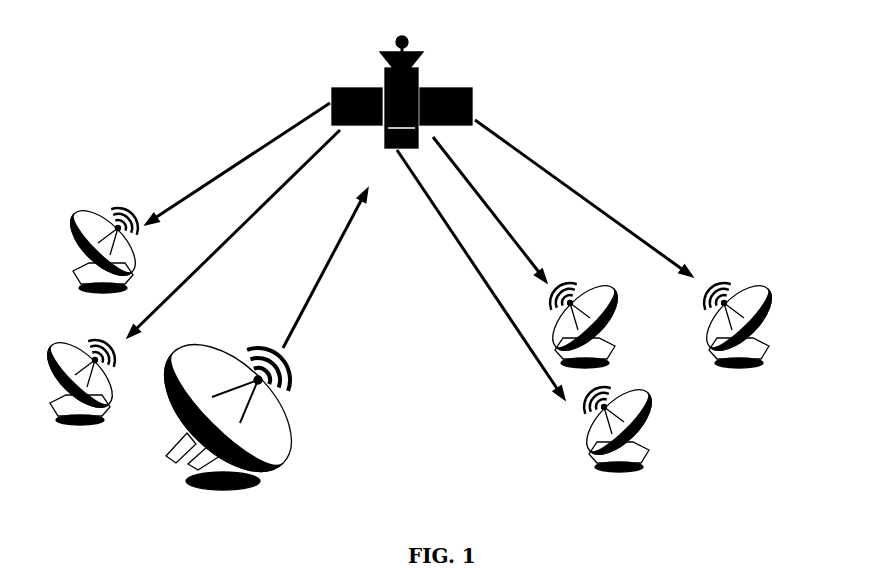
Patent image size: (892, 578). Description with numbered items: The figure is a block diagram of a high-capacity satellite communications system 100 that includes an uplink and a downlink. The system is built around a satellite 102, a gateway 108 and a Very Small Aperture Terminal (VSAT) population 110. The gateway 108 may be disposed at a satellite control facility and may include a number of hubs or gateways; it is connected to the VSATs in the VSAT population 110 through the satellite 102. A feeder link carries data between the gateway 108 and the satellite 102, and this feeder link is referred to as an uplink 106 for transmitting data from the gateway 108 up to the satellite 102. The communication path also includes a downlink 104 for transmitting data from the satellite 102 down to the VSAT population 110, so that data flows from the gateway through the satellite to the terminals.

The high-capacity satellite communications system 100 is at (677, 93).
The satellite 102 is at (447, 90).
The downlink 104 is at (578, 198).
The uplink 106 is at (307, 302).
The gateway 108 is at (272, 462).
The Very Small Aperture Terminal (VSAT) population 110 is at (642, 442).